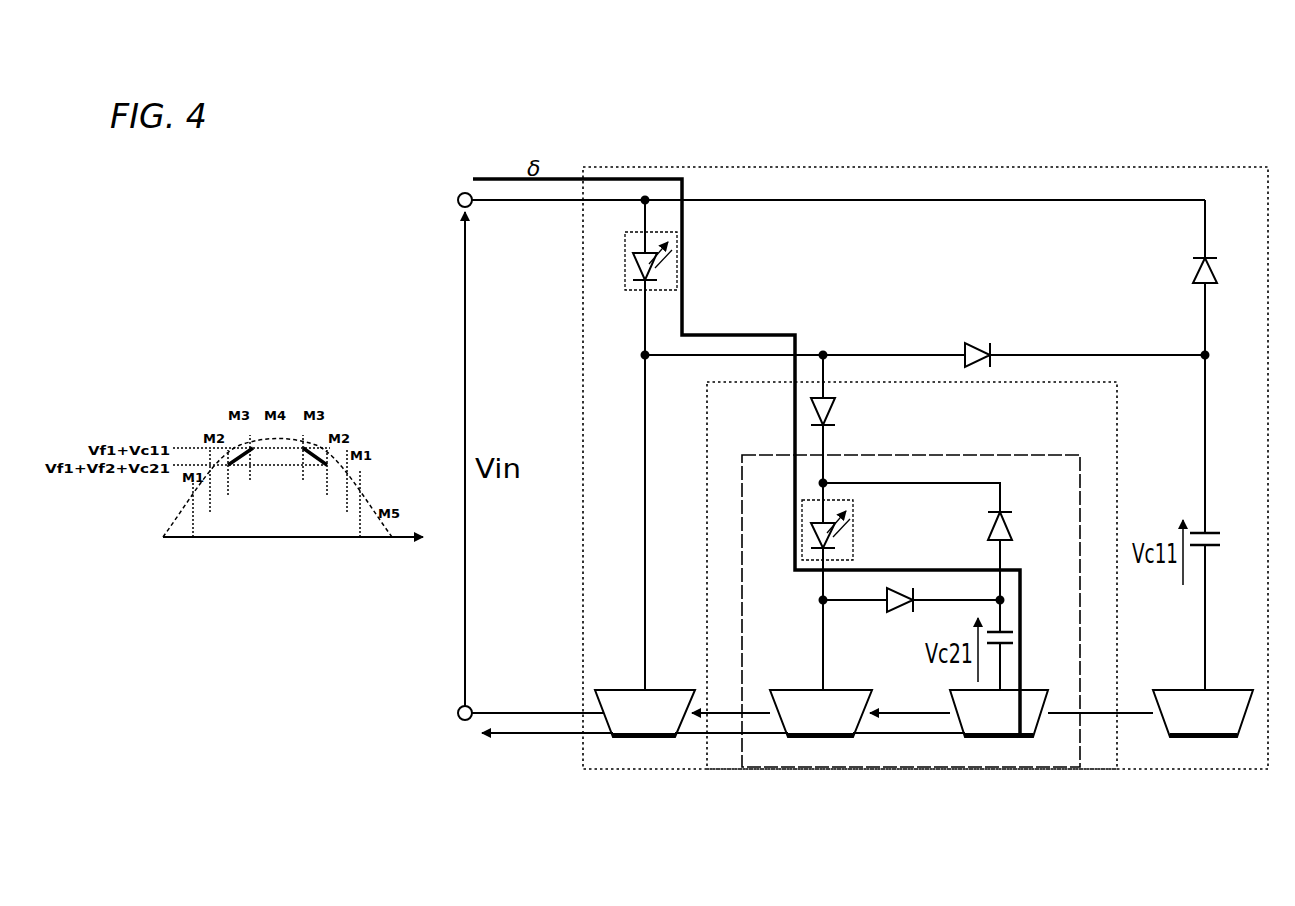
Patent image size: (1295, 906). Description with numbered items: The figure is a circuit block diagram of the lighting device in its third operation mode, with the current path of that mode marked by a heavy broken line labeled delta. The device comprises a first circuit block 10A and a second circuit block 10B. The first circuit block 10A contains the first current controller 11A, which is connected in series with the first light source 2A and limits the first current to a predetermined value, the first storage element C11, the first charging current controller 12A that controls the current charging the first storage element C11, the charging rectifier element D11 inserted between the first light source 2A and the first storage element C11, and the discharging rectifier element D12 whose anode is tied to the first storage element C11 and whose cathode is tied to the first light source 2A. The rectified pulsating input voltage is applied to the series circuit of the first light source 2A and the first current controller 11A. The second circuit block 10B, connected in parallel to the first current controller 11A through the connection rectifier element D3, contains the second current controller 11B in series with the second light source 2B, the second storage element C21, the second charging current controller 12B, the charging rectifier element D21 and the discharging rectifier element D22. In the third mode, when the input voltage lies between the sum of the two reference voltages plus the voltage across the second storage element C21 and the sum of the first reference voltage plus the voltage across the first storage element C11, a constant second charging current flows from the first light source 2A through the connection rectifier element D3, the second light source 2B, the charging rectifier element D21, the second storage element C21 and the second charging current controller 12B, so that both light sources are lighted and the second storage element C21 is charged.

The first circuit block 10A is at (932, 138).
The second circuit block 10B is at (935, 770).
The first light source 2A is at (628, 292).
The second light source 2B is at (855, 520).
The first current controller 11A is at (620, 690).
The second current controller 11B is at (795, 690).
The first charging current controller 12A is at (1232, 678).
The second charging current controller 12B is at (958, 698).
The charging rectifier element D11 is at (978, 338).
The discharging rectifier element D12 is at (1177, 273).
The connection rectifier element D3 is at (843, 416).
The charging rectifier element D21 is at (883, 617).
The discharging rectifier element D22 is at (973, 529).
The first storage element C11 is at (1223, 524).
The second storage element C21 is at (1026, 630).